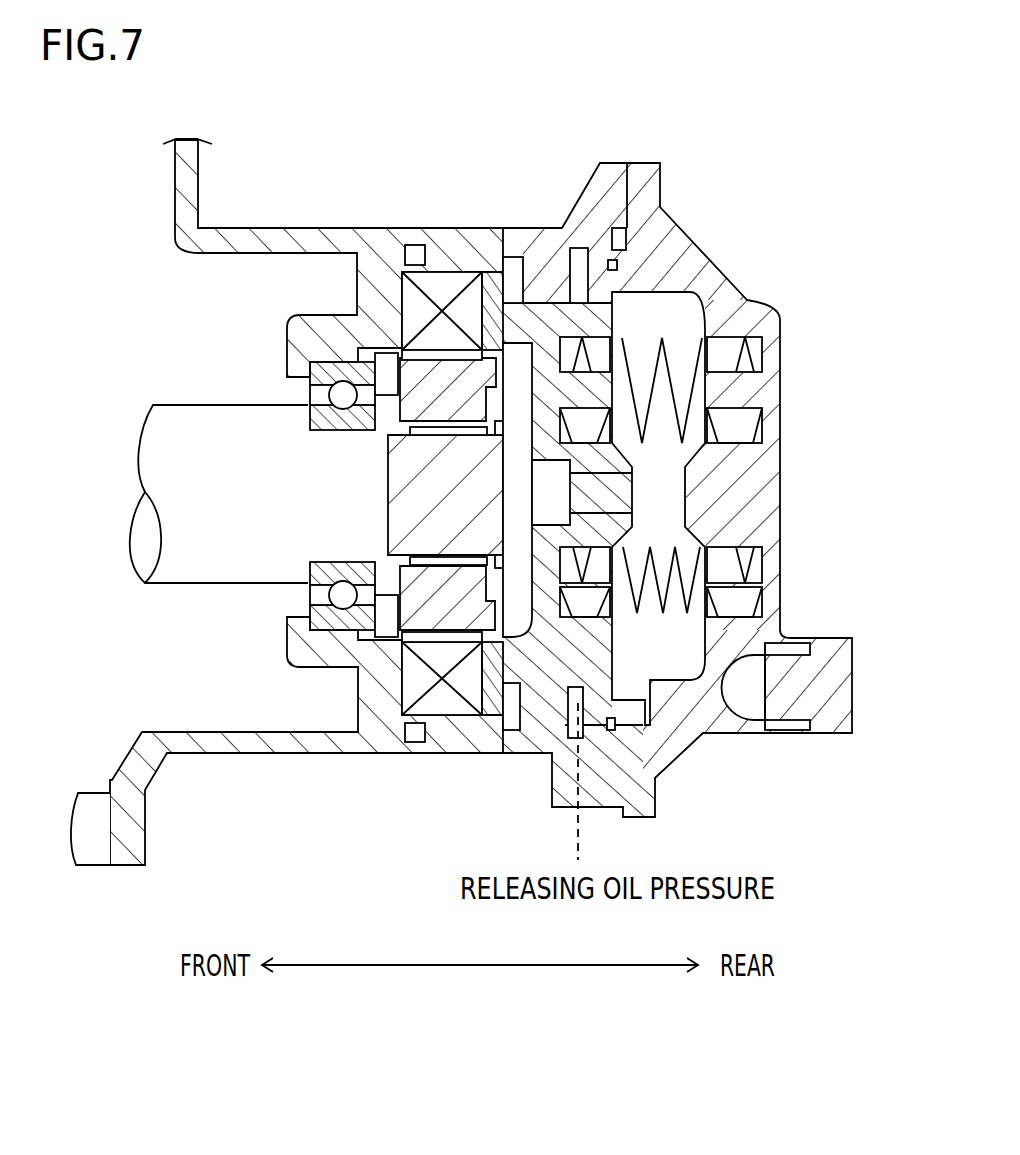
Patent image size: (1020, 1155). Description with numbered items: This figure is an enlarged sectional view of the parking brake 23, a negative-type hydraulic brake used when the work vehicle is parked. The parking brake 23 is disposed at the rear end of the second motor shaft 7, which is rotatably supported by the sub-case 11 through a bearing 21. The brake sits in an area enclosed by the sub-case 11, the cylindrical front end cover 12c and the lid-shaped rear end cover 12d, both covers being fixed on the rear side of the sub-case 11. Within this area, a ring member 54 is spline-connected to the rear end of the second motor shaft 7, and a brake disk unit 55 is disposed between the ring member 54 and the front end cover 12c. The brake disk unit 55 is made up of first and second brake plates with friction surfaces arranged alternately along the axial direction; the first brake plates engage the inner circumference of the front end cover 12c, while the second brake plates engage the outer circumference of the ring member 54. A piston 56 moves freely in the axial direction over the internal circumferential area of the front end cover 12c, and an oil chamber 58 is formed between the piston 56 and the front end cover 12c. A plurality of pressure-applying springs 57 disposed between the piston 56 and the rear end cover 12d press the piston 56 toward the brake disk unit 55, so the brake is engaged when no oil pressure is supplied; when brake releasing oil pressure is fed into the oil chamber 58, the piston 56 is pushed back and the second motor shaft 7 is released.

The second motor shaft 7 is at (212, 418).
The sub-case 11 is at (236, 238).
The front end cover 12c is at (595, 186).
The rear end cover 12d is at (653, 192).
The bearing 21 is at (343, 597).
The parking brake 23 is at (406, 268).
The ring member 54 is at (512, 400).
The brake disk unit 55 is at (441, 276).
The piston 56 is at (636, 270).
The pressure-applying springs 57 is at (688, 335).
The oil chamber 58 is at (578, 703).